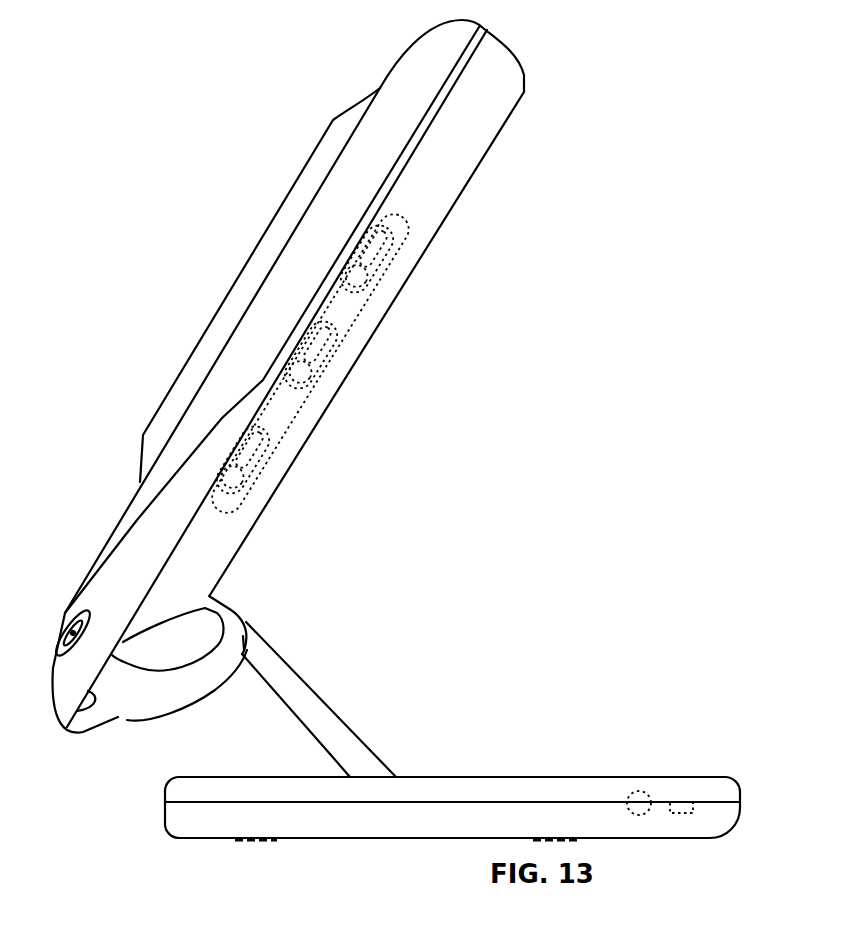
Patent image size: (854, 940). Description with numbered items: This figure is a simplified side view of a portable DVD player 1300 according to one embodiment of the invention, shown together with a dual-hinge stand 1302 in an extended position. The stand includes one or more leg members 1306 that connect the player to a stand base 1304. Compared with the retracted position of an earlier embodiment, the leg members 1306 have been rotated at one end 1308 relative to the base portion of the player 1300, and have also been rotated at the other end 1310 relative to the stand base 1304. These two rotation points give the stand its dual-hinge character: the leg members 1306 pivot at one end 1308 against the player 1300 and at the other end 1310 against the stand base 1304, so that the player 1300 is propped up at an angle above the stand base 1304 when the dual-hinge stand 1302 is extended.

The portable DVD player 1300 is at (213, 237).
The dual-hinge stand 1302 is at (510, 742).
The stand base 1304 is at (709, 777).
The leg members 1306 is at (300, 677).
The one end 1308 is at (248, 627).
The other end 1310 is at (350, 777).